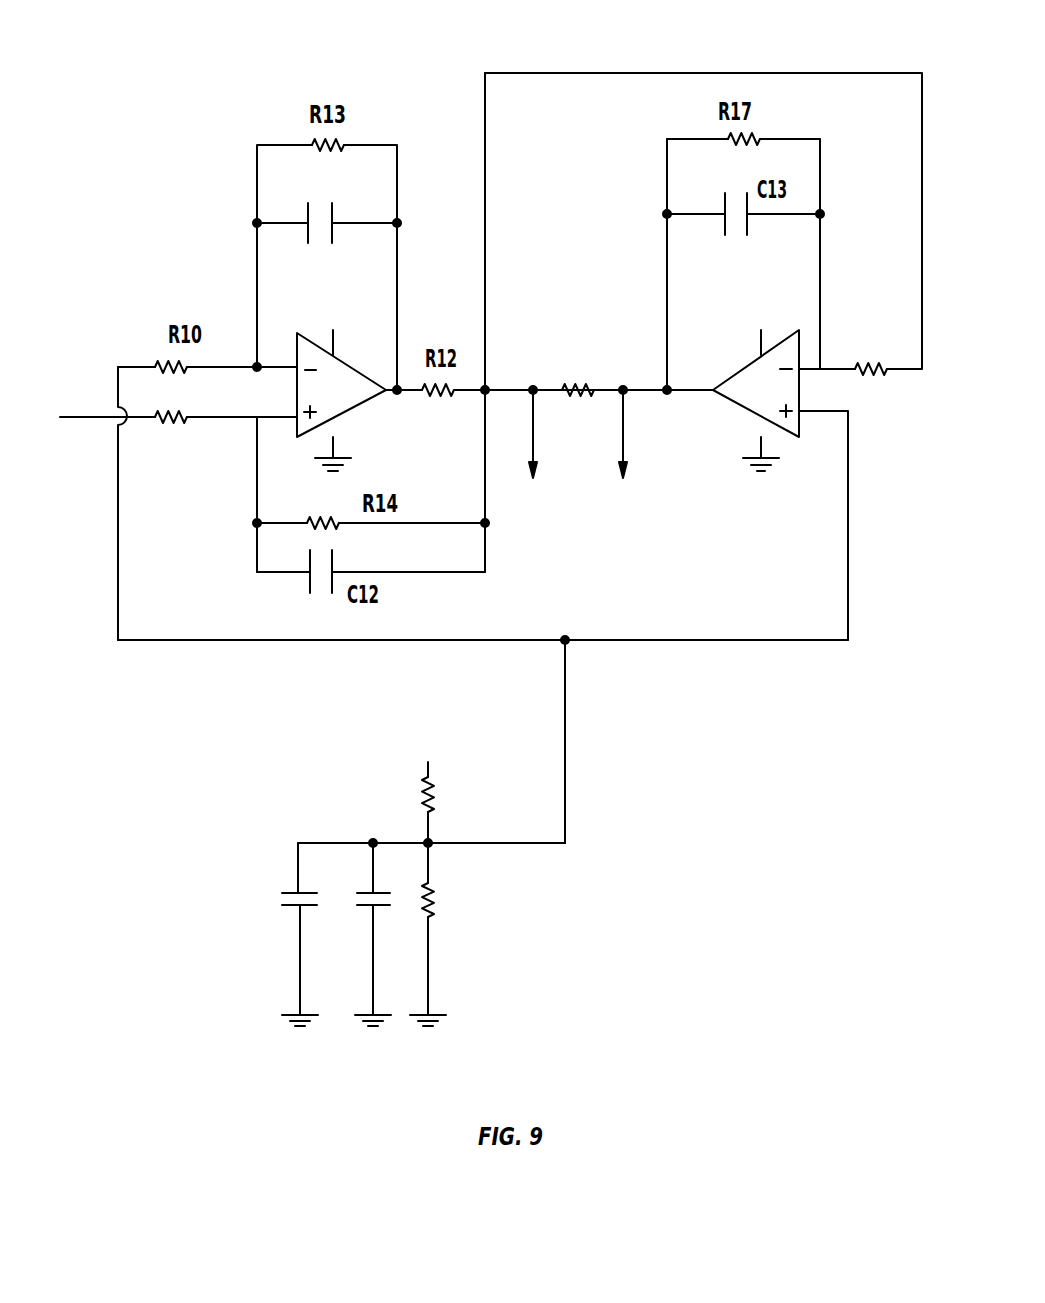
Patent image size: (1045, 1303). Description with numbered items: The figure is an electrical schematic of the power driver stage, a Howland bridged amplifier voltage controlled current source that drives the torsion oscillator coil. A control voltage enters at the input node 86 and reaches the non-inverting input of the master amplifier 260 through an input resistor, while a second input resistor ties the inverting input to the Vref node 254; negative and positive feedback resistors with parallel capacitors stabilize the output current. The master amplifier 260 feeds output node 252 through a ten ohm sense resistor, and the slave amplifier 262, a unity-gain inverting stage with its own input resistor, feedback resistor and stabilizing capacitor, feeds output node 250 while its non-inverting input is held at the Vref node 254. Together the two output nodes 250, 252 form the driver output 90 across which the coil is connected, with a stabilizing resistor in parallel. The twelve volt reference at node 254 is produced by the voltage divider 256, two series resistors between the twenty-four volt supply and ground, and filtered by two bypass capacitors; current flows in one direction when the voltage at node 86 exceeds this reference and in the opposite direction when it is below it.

The input node 86 is at (82, 419).
The driver circuit output 90 is at (600, 555).
The output node 250 is at (626, 465).
The output node 252 is at (536, 465).
The Vref node 254 is at (566, 643).
The voltage divider 256 is at (505, 953).
The master amplifier 260 is at (352, 408).
The slave amplifier 262 is at (728, 398).